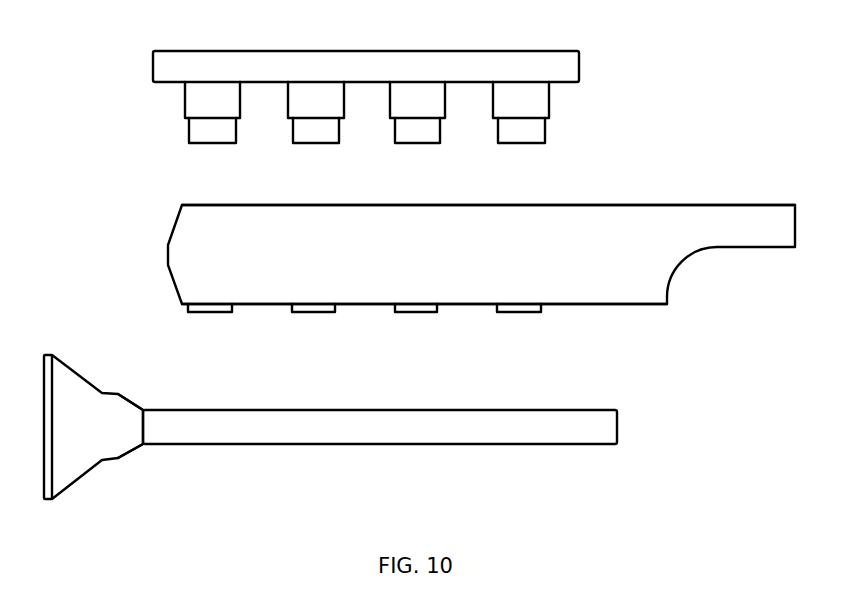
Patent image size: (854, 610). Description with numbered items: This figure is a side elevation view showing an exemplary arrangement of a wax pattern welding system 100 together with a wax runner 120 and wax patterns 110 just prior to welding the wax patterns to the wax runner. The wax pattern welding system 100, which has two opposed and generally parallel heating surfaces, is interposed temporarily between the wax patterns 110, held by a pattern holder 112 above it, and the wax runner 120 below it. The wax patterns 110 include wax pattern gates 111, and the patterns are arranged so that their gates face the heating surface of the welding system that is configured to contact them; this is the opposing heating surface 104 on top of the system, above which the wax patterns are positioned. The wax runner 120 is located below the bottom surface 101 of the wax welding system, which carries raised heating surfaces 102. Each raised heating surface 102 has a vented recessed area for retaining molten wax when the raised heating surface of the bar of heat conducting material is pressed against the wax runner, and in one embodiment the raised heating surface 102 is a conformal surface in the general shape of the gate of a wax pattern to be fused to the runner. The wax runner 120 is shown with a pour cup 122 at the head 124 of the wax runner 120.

The wax pattern welding system 100 is at (678, 237).
The bottom surface 101 is at (637, 307).
The raised heating surfaces 102 is at (417, 312).
The opposing heating surface 104 is at (420, 204).
The wax patterns 110 is at (548, 100).
The wax pattern gates 111 is at (547, 128).
The pattern holder 112 is at (580, 62).
The wax runner 120 is at (500, 425).
The pour cup 122 is at (87, 470).
The head 124 is at (145, 446).